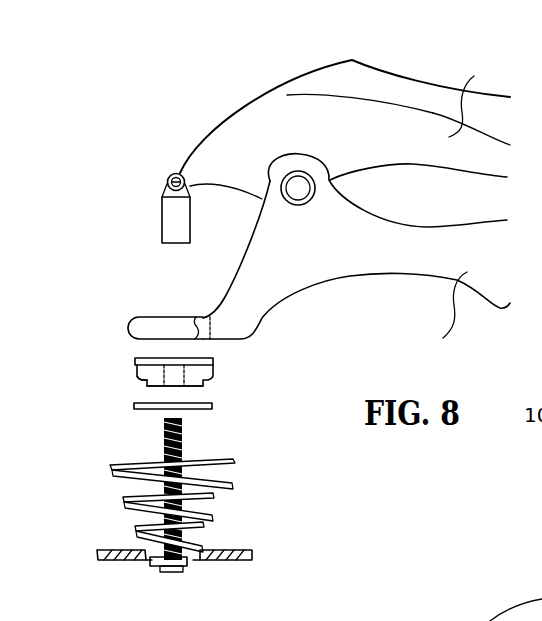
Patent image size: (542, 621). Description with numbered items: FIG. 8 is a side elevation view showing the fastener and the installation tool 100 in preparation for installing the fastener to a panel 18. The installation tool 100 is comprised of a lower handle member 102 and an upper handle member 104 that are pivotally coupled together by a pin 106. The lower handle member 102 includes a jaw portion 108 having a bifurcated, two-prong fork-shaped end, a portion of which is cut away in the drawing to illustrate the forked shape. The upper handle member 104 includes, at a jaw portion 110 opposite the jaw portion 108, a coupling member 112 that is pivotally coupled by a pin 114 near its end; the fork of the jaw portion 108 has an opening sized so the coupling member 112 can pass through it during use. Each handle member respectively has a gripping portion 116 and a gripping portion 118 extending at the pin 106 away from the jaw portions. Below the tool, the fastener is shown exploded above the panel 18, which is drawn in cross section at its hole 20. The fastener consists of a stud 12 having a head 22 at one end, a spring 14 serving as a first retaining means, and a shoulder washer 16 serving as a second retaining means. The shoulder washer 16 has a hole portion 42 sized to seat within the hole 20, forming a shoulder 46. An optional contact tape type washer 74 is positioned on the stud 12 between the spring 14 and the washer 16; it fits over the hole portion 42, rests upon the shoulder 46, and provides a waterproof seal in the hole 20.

The installation tool 100 is at (256, 91).
The lower handle member 102 is at (320, 288).
The upper handle member 104 is at (354, 56).
The pin 106 is at (309, 187).
The jaw portion 108 is at (127, 314).
The jaw portion 110 is at (203, 133).
The coupling member 112 is at (159, 214).
The pin 114 is at (160, 176).
The gripping portion 116 is at (440, 319).
The gripping portion 118 is at (474, 92).
The stud 12 is at (188, 439).
The spring 14 is at (234, 481).
The shoulder washer 16 is at (219, 372).
The panel 18 is at (242, 567).
The hole 20 is at (193, 563).
The head 22 is at (167, 573).
The hole portion 42 is at (208, 390).
The shoulder 46 is at (147, 385).
The contact tape type washer 74 is at (215, 406).